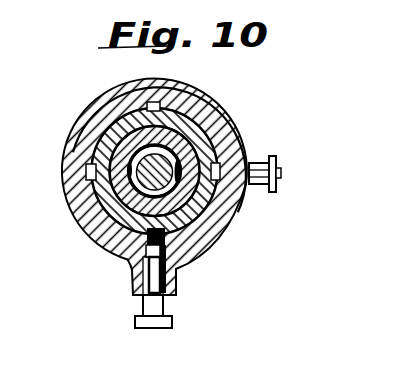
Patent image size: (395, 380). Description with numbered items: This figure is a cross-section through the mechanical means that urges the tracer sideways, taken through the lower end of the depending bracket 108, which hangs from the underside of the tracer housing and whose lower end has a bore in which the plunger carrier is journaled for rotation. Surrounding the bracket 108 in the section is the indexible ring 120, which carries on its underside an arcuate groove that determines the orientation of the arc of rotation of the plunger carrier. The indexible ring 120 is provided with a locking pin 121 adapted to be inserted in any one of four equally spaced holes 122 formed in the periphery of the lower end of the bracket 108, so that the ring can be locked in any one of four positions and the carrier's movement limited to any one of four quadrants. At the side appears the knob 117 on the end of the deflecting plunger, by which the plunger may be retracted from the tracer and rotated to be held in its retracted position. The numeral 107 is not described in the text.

The shaft 107 is at (146, 182).
The depending bracket 108 is at (128, 117).
The knob 117 is at (280, 170).
The indexible ring 120 is at (225, 106).
The locking pin 121 is at (167, 248).
The holes 122 is at (88, 172).